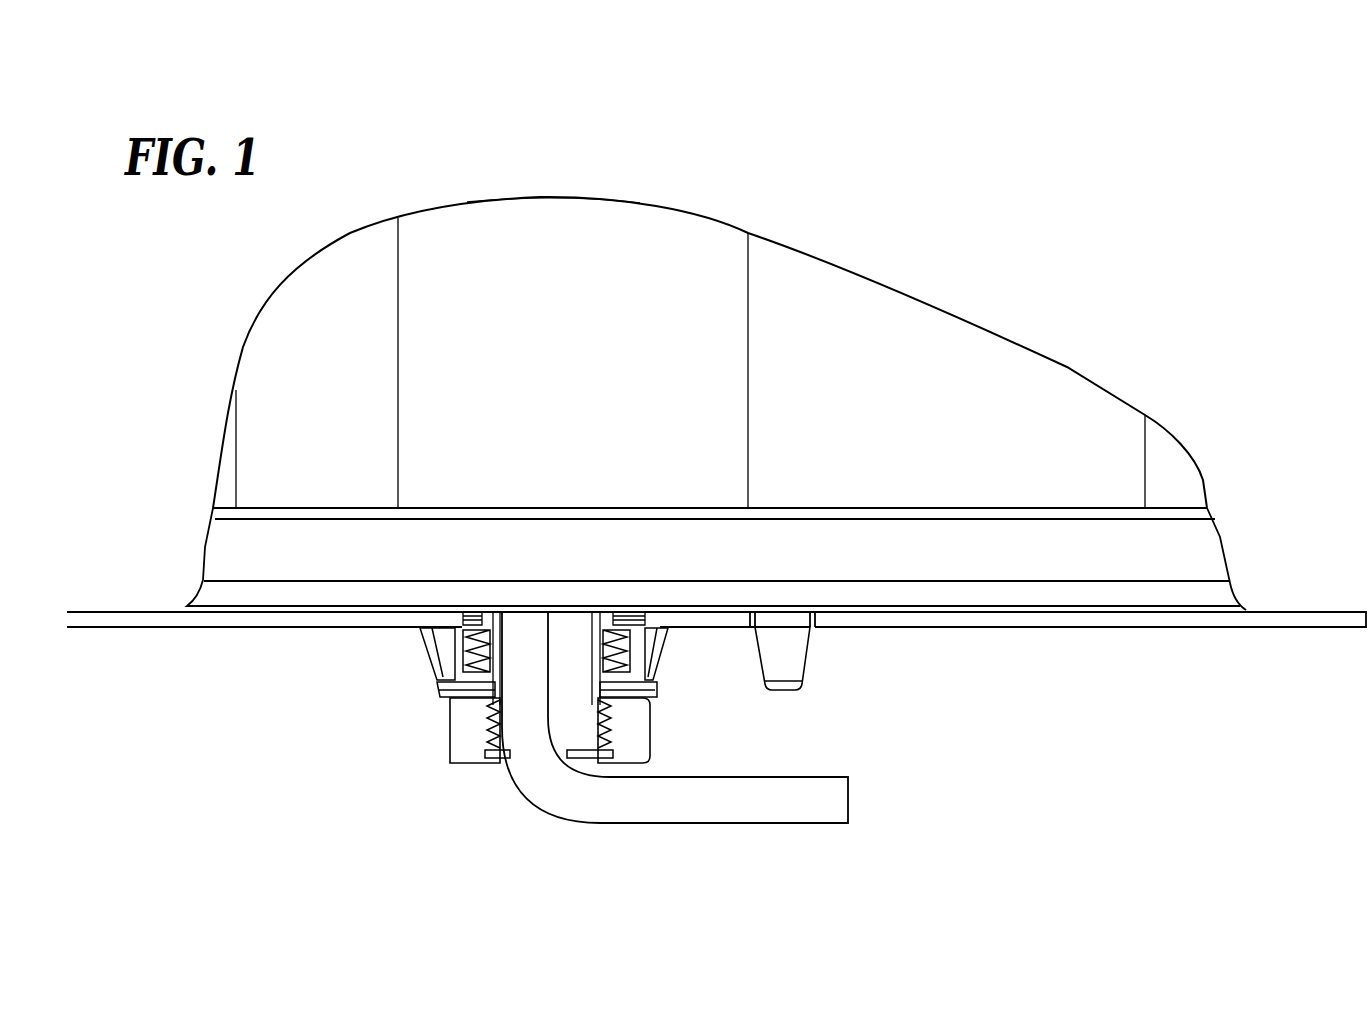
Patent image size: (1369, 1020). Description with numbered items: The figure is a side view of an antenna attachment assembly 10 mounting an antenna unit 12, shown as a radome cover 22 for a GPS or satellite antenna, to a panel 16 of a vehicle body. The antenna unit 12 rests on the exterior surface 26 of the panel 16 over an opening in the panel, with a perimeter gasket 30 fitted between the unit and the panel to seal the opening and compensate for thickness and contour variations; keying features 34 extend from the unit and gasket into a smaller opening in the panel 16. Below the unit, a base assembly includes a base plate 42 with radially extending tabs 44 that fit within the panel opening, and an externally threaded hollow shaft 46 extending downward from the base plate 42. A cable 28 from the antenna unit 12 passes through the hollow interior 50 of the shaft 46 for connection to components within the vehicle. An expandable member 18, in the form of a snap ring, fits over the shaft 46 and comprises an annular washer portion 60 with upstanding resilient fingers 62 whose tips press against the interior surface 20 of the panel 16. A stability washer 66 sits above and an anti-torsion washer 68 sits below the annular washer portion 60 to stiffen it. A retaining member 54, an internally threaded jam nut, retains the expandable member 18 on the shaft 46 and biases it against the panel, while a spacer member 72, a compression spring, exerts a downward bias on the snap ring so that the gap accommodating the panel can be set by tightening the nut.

The antenna attachment assembly 10 is at (440, 788).
The antenna unit 12 is at (915, 332).
The panel 16 is at (1188, 618).
The expandable member 18 is at (667, 628).
The interior surface 20 is at (1092, 627).
The radome cover 22 is at (635, 220).
The exterior surface 26 is at (1300, 610).
The cable 28 is at (813, 785).
The perimeter gasket 30 is at (1208, 557).
The keying features 34 is at (800, 652).
The base plate 42 is at (492, 620).
The radially extending tabs 44 is at (651, 630).
The externally threaded hollow shaft 46 is at (612, 714).
The hollow interior 50 is at (573, 728).
The retaining member 54 is at (470, 742).
The annular washer portion 60 is at (440, 697).
The fingers 62 is at (453, 628).
The stability washer 66 is at (437, 683).
The anti-torsion washer 68 is at (447, 720).
The spacer member 72 is at (655, 684).